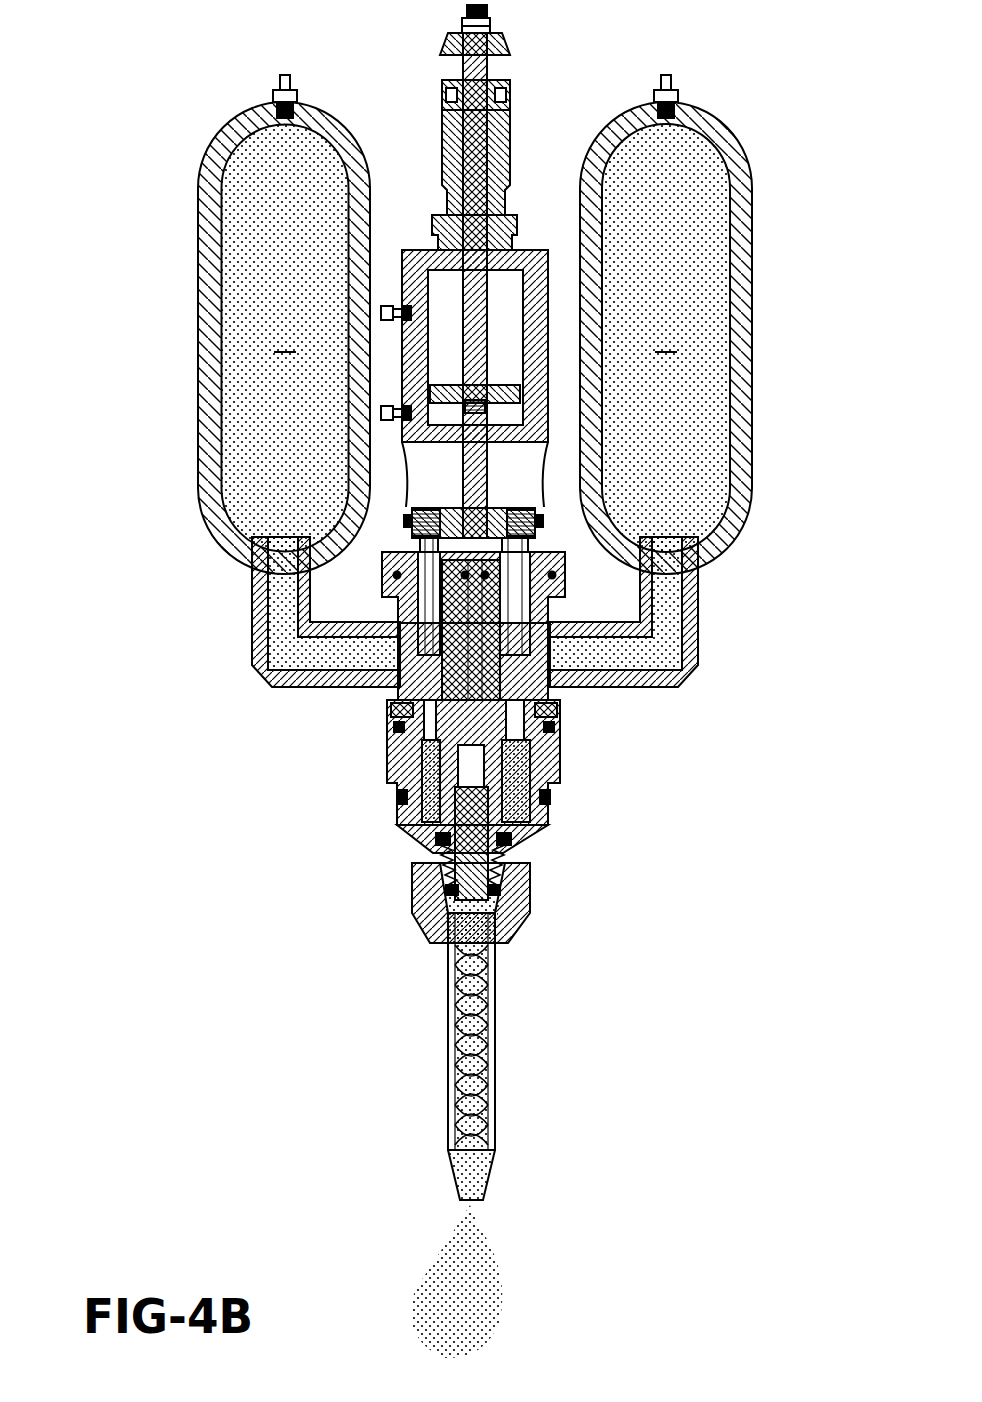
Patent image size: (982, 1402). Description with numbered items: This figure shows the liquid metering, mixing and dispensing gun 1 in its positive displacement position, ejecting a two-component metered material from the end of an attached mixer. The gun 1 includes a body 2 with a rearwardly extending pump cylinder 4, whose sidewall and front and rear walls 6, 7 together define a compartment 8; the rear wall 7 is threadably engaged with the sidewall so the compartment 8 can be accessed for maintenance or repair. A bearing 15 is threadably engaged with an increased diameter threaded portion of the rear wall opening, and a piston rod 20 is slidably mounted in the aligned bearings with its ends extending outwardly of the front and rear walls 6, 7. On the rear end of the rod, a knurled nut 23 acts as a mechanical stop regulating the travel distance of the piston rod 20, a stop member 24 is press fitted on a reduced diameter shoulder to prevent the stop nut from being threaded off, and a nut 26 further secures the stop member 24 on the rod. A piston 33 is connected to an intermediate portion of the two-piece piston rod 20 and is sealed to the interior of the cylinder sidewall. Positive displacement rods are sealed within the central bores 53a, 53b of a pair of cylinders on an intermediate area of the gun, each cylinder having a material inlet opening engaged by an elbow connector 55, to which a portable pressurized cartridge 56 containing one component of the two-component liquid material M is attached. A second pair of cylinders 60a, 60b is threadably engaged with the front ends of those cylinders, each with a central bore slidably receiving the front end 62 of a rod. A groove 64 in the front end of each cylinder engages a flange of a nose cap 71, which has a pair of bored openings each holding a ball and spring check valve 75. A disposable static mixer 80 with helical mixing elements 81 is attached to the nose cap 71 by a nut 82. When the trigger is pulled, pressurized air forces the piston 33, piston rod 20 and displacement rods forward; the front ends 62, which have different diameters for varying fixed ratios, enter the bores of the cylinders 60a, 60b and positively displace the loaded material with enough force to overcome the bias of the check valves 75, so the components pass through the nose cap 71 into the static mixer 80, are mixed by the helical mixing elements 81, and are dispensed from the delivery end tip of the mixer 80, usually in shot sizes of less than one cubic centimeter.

The liquid metering, mixing and dispensing gun 1 is at (785, 105).
The body 2 is at (546, 496).
The pump cylinder 4 is at (547, 292).
The front wall 6 is at (433, 445).
The rear wall 7 is at (414, 250).
The compartment 8 is at (502, 300).
The bearing 15 is at (502, 228).
The piston rod 20 is at (487, 390).
The knurled nut 23 is at (443, 143).
The stop member 24 is at (450, 40).
The nut 26 is at (492, 25).
The piston 33 is at (460, 388).
The central bore 53a is at (400, 592).
The central bore 53b is at (548, 592).
The elbow connector 55 is at (250, 660).
The portable pressurized cartridge 56 is at (198, 290).
The cylinder 60a is at (390, 768).
The cylinder 60b is at (556, 776).
The front end 62 is at (420, 716).
The groove 64 is at (396, 794).
The nose cap 71 is at (406, 840).
The ball and spring check valve 75 is at (410, 860).
The static mixer 80 is at (497, 1078).
The helical mixing elements 81 is at (456, 1100).
The nut 82 is at (420, 920).